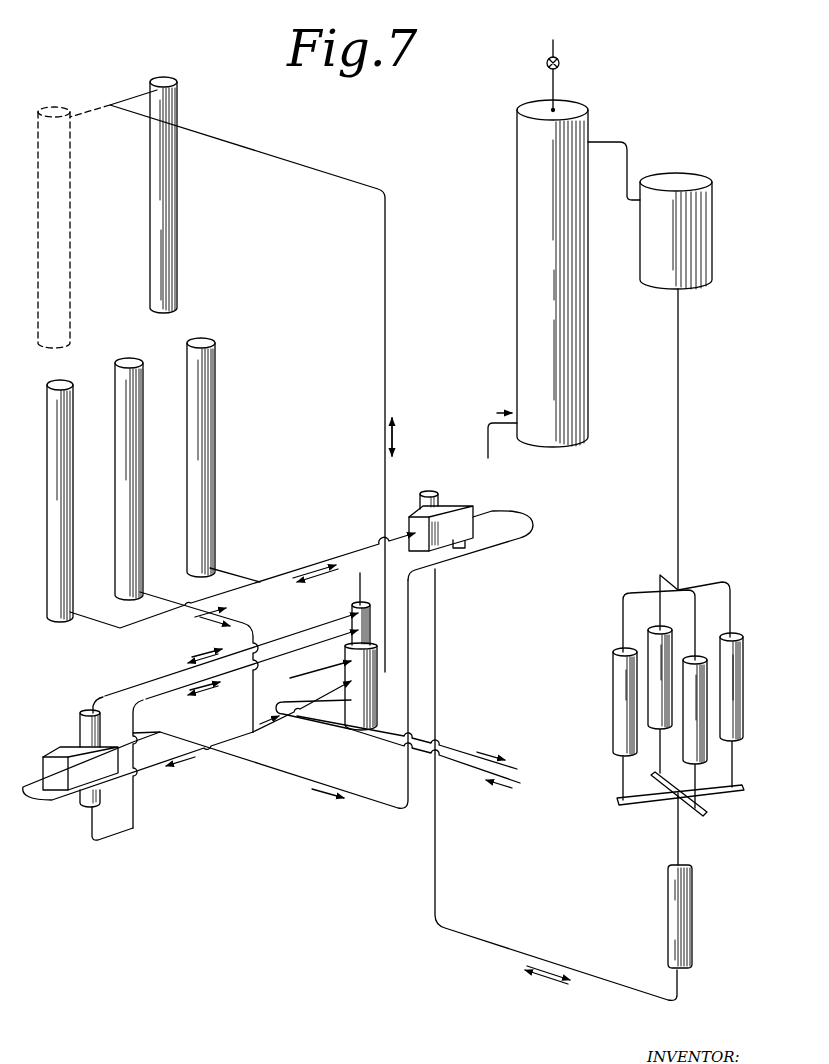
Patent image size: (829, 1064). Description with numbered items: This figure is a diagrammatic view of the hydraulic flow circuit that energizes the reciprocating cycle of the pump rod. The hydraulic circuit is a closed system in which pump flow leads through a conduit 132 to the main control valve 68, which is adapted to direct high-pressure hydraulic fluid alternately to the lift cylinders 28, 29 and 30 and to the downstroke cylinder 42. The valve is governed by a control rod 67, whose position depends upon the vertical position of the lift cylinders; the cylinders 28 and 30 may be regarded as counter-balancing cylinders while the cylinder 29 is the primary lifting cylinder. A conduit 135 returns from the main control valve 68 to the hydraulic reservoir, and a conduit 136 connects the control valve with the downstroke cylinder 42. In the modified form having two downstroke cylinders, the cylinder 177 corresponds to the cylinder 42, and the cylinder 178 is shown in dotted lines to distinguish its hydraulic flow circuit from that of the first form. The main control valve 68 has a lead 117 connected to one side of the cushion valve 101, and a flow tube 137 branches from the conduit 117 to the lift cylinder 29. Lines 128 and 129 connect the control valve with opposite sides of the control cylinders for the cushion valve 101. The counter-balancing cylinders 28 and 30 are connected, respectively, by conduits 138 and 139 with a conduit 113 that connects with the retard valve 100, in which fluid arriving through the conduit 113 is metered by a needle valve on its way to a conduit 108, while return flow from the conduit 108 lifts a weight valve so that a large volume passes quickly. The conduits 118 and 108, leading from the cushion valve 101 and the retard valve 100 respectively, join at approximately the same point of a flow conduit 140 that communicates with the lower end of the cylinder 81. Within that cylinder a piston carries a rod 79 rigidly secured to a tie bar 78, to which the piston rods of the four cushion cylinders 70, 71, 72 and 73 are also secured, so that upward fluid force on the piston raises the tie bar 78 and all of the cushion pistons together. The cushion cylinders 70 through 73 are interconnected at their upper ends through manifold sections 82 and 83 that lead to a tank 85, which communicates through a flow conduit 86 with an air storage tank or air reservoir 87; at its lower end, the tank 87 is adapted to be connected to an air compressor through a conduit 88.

The return or downstroke cylinder 42 is at (138, 195).
The downstroke cylinder 177 is at (157, 172).
The downstroke cylinder 178 is at (70, 256).
The conduit 136 is at (383, 323).
The lift cylinder 28 is at (65, 462).
The lift cylinder 29 is at (137, 446).
The lift cylinder 30 is at (205, 434).
The conduit 138 is at (85, 625).
The conduit 139 is at (240, 572).
The flow conduit 113 is at (355, 550).
The flow tube or conduit 137 is at (228, 615).
The conduit 129 is at (147, 682).
The cushion valve 101 is at (60, 752).
The conduit 128 is at (112, 835).
The conduit 117 is at (148, 768).
The flow conduit 118 is at (250, 760).
The control rod 67 is at (357, 588).
The main control valve 68 is at (340, 657).
The conduit 132 is at (360, 738).
The conduit 135 is at (453, 747).
The retard valve 100 is at (453, 503).
The conduit 108 is at (492, 545).
The flow conduit 140 is at (436, 862).
The air storage tank or air reservoir 87 is at (530, 194).
The tank 85 is at (697, 232).
The flow conduit 86 is at (680, 380).
The conduit 88 is at (488, 430).
The manifold section 82 is at (640, 590).
The manifold section 83 is at (688, 602).
The cushion cylinder 70 is at (617, 702).
The cushion cylinder 71 is at (740, 690).
The cushion cylinder 72 is at (643, 640).
The cushion cylinder 73 is at (700, 655).
The tie bar 78 is at (655, 805).
The rod 79 is at (680, 842).
The cylinder 81 is at (680, 910).